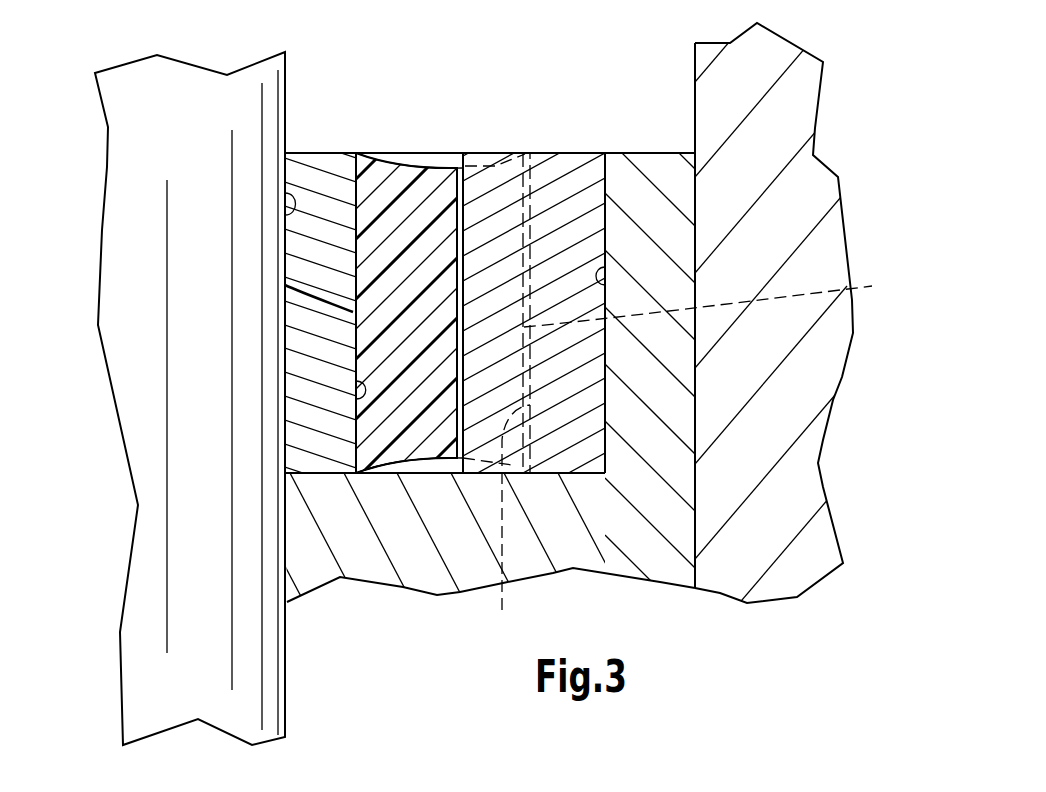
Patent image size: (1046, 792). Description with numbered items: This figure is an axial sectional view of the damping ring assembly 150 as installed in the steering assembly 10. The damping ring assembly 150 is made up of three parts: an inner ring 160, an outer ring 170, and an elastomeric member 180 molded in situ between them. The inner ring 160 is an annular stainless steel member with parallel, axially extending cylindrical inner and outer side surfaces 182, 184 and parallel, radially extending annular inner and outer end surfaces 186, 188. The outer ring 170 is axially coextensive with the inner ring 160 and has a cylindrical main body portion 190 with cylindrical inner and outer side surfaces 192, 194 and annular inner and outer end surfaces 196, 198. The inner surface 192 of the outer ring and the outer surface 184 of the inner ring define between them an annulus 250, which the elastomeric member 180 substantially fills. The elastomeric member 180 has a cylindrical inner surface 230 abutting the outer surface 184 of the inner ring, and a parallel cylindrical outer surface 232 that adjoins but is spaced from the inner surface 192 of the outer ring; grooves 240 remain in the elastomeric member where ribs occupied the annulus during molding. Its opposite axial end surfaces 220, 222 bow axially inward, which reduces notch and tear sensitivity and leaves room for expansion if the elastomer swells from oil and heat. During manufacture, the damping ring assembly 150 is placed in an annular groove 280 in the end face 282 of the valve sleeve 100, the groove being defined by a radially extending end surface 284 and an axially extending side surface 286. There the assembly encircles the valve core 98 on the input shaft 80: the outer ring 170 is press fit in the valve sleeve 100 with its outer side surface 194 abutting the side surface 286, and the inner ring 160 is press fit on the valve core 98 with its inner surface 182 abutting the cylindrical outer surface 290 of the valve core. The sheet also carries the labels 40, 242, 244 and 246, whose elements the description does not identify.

The steering assembly 10 is at (300, 32).
The frame member 40 is at (720, 605).
The input shaft 80 is at (216, 745).
The valve core 98 is at (300, 682).
The valve sleeve 100 is at (474, 602).
The damping ring assembly 150 is at (460, 88).
The inner ring 160 is at (330, 140).
The outer ring 170 is at (563, 140).
The elastomeric member 180 is at (400, 145).
The inner side surface 182 is at (285, 333).
The outer side surface 184 is at (356, 399).
The inner end surface 186 is at (295, 473).
The outer end surface 188 is at (303, 152).
The main body portion 190 is at (577, 352).
The inner side surface 192 is at (506, 524).
The outer side surface 194 is at (605, 185).
The inner end surface 196 is at (552, 475).
The outer end surface 198 is at (590, 152).
The axial end surface 220 is at (423, 460).
The axial end surface 222 is at (437, 167).
The inner surface 230 is at (285, 285).
The outer surface 232 is at (722, 532).
The annulus 250 is at (385, 490).
The annular groove 280 is at (625, 462).
The end face 282 is at (665, 152).
The end surface 284 is at (587, 471).
The side surface 286 is at (605, 268).
The outer surface 290 is at (285, 195).
The grooves 240 is at (495, 791).
The element 242 is at (370, 782).
The element 244 is at (530, 791).
The element 246 is at (460, 791).